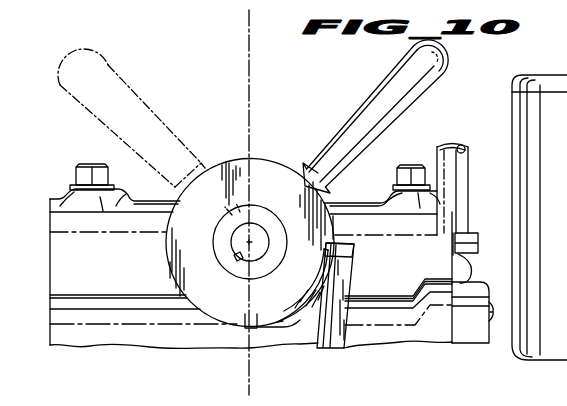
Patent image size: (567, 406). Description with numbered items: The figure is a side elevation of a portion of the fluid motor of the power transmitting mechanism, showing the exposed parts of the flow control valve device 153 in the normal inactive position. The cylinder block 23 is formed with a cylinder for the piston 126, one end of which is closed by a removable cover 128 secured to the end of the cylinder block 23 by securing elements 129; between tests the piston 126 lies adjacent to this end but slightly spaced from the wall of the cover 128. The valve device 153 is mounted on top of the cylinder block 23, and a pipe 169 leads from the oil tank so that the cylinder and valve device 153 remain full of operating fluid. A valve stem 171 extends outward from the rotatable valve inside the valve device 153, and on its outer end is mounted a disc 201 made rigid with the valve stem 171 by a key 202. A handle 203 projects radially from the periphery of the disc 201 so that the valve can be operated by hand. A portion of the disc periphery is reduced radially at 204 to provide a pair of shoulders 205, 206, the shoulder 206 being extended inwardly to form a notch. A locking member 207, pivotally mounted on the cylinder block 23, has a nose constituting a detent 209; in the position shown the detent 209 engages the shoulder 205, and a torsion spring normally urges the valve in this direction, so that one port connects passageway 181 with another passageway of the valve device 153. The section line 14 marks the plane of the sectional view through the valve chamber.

The section line 14- 14 is at (195, 24).
The cylinder block 23 is at (130, 336).
The piston 126 is at (511, 240).
The removable cover 128 is at (474, 341).
The securing elements 129 is at (493, 304).
The valve device 153 is at (77, 228).
The pipe 169 is at (450, 125).
The valve stem 171 is at (258, 236).
The passageway 181 is at (398, 309).
The disc 201 is at (186, 253).
The key 202 is at (235, 260).
The handle 203 is at (108, 67).
The reduced periphery portion 204 is at (315, 258).
The shoulder 205 is at (332, 233).
The shoulder (notch) 206 is at (246, 314).
The locking member 207 is at (350, 342).
The detent 209 is at (350, 248).